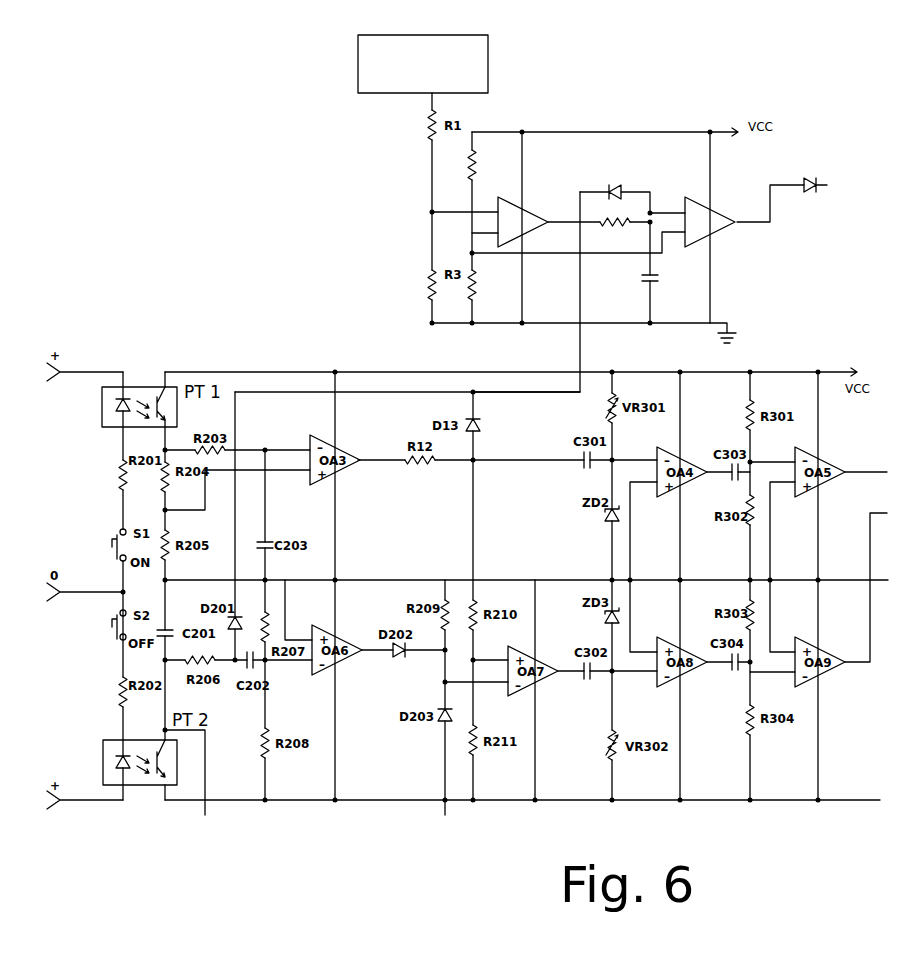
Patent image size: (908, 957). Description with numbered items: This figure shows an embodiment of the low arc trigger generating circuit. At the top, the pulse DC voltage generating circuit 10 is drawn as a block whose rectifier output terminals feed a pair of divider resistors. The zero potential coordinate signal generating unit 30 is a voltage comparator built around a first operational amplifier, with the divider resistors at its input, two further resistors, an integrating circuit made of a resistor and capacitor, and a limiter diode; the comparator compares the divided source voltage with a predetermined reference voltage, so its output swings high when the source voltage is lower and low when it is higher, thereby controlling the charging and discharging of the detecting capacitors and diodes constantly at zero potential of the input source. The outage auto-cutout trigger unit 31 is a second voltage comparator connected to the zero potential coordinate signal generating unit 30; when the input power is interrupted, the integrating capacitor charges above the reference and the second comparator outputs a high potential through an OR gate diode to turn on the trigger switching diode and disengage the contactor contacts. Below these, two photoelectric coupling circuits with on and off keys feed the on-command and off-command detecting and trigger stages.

The pulse DC voltage generating circuit 10 is at (385, 82).
The zero potential coordinate signal generating unit 30 is at (543, 141).
The outage auto-cutout trigger unit 31 is at (675, 141).